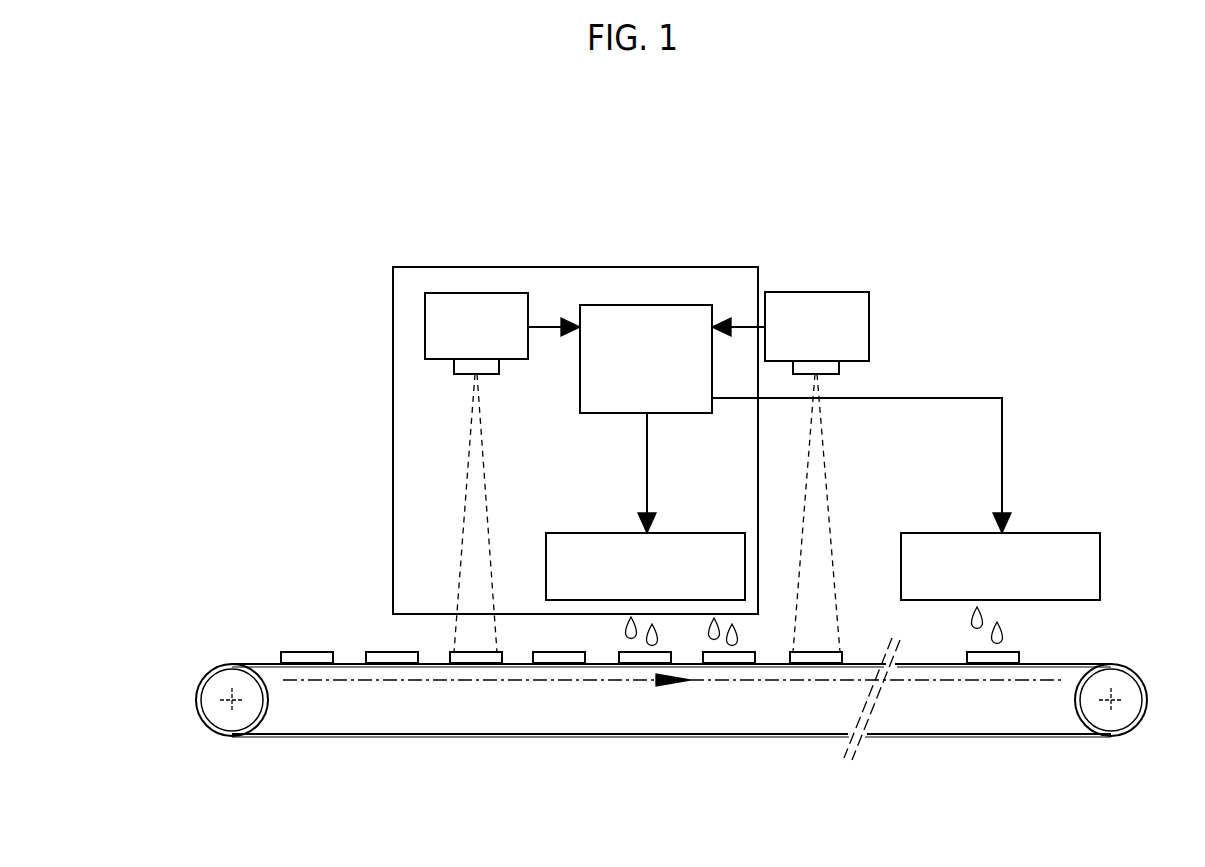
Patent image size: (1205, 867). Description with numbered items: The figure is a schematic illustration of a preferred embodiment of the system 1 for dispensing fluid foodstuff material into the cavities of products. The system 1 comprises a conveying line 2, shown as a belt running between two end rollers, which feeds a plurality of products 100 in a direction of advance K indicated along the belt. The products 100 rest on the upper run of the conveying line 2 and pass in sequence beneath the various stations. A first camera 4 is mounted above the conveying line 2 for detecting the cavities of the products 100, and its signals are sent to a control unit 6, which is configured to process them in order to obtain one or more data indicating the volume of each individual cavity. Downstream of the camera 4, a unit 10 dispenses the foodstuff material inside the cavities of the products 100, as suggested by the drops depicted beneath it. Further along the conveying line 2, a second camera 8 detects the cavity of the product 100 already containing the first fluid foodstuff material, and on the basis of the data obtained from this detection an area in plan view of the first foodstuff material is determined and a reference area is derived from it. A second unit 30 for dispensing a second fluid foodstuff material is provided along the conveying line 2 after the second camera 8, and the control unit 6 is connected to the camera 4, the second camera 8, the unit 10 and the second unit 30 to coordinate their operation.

The system 1 is at (275, 398).
The conveying line 2 is at (250, 736).
The camera 4 is at (467, 306).
The control unit 6 is at (663, 318).
The second camera 8 is at (850, 322).
The unit for dispensing the foodstuff material 10 is at (723, 569).
The second unit for dispensing a second fluid foodstuff material 30 is at (1086, 561).
The products 100 is at (383, 652).
The direction of advance K is at (773, 684).